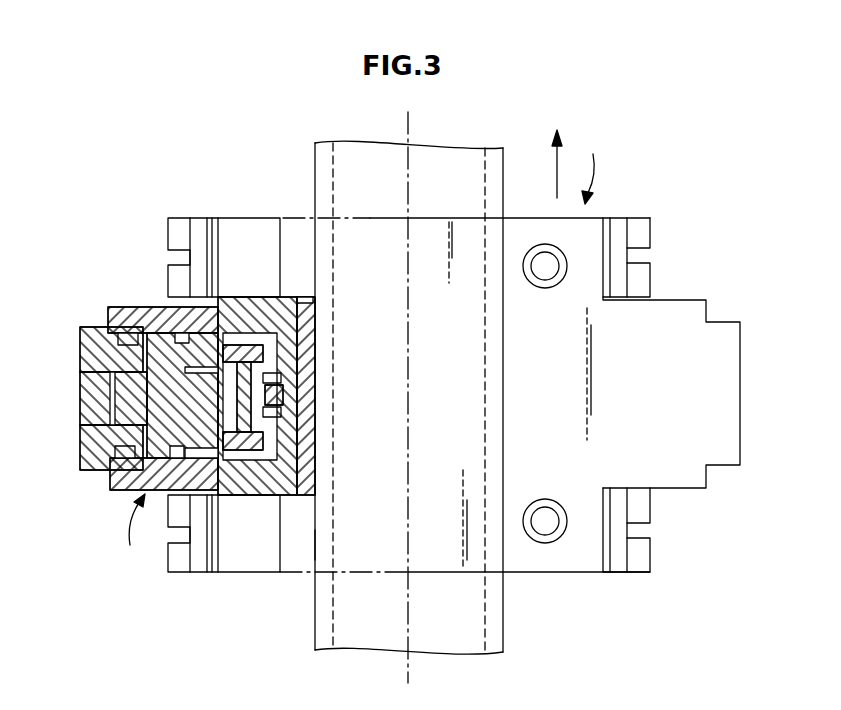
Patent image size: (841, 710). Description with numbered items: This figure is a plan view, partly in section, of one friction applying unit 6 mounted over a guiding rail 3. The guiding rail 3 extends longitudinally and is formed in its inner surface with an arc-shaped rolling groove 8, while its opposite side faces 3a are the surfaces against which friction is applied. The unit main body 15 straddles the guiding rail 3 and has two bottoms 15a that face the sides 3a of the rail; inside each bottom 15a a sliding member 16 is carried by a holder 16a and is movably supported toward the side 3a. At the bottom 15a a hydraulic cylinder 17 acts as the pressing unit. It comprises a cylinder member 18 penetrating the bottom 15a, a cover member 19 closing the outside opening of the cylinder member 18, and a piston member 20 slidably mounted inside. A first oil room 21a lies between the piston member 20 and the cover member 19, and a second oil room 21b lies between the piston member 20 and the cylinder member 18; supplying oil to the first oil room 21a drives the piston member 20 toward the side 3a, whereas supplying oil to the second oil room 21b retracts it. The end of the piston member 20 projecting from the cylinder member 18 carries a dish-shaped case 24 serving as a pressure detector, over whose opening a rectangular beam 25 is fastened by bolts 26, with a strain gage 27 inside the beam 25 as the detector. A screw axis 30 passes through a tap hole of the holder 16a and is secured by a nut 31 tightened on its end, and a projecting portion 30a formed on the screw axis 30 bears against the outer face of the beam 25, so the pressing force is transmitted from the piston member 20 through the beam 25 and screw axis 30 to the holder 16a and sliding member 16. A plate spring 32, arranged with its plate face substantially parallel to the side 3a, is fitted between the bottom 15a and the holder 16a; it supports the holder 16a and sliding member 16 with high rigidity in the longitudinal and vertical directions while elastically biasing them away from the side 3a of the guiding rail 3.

The guiding rail 3 is at (497, 633).
The side of the guiding rail 3a is at (317, 544).
The friction applying unit 6 is at (592, 165).
The rolling groove 8 is at (333, 614).
The unit main body 15 is at (530, 228).
The bottom of the unit main body 15a is at (199, 232).
The sliding member 16 is at (310, 347).
The holder 16a is at (254, 575).
The hydraulic cylinder 17 is at (131, 536).
The cylinder member 18 is at (128, 318).
The cover member 19 is at (92, 352).
The piston member 20 is at (90, 410).
The first oil room 21a is at (142, 353).
The second oil room 21b is at (200, 345).
The case 24 is at (247, 460).
The beam 25 is at (265, 428).
The bolt 26 is at (253, 353).
The strain gage 27 is at (270, 362).
The screw axis 30 is at (265, 397).
The projecting portion 30a is at (262, 376).
The nut 31 is at (270, 411).
The plate spring 32 is at (218, 262).